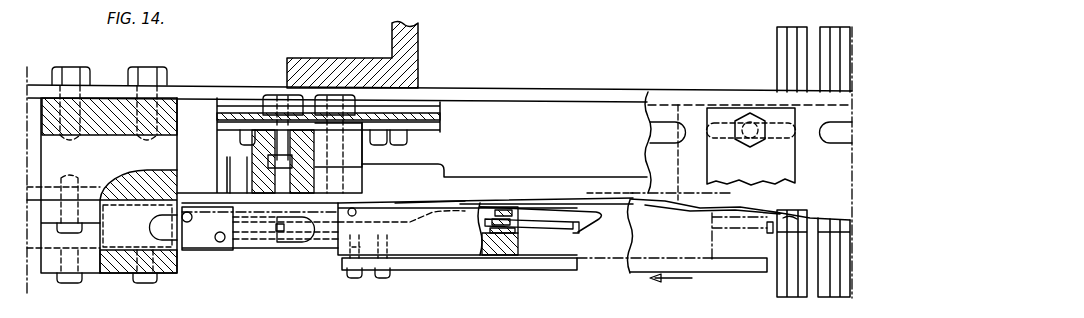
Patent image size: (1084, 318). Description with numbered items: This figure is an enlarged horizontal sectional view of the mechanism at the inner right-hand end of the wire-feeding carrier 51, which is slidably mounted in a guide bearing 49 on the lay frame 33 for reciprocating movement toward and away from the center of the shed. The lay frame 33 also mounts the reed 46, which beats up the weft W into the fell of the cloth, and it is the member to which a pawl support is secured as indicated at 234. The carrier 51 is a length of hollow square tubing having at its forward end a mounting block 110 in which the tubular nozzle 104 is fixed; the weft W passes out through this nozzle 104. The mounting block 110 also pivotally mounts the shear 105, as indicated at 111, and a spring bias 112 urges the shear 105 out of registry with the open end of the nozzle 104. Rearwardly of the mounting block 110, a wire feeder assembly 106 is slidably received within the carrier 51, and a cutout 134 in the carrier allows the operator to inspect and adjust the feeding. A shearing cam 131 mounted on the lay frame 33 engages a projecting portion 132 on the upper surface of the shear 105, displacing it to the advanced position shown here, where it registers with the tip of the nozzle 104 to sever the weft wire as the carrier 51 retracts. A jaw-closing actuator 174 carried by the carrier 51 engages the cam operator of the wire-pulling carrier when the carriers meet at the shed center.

The lay frame 33 is at (417, 53).
The reed 46 is at (703, 206).
The guide bearing 49 is at (118, 267).
The wire-feeding carrier 51 is at (267, 252).
The nozzle member 104 is at (540, 230).
The shear 105 is at (583, 231).
The wire feeder assembly 106 is at (200, 240).
The mounting block 110 is at (495, 252).
The shear pivot 111 is at (355, 208).
The spring bias 112 is at (503, 212).
The shearing cam 131 is at (468, 182).
The projecting portion 132 is at (427, 203).
The cutout 134 is at (230, 217).
The jaw-closing actuator 174 is at (550, 269).
The pawl support fastening 234 is at (750, 113).
The weft W is at (280, 232).